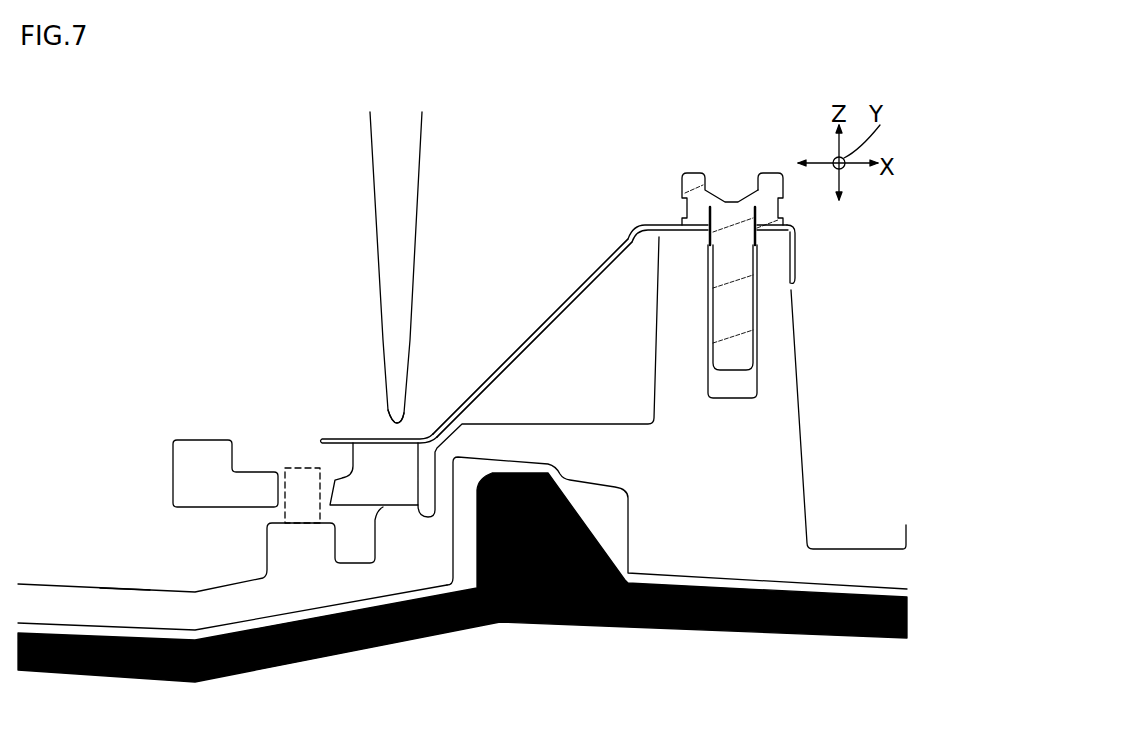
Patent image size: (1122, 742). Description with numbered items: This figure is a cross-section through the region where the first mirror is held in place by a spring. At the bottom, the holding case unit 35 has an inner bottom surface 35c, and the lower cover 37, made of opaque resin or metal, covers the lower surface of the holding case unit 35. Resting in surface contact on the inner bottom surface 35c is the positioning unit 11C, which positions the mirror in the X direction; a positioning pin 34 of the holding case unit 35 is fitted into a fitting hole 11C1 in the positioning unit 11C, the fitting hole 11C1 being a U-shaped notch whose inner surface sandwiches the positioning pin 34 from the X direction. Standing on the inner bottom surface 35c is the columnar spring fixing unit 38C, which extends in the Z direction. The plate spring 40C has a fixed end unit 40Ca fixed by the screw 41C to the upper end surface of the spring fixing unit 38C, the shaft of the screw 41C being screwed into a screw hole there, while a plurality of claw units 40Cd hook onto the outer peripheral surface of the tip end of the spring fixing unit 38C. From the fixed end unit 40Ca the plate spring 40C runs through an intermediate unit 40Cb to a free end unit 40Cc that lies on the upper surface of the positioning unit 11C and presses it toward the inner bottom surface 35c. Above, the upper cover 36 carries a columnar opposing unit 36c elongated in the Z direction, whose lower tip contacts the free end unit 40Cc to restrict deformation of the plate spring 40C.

The upper cover 36 is at (372, 172).
The opposing unit 36c is at (385, 280).
The plate spring 40C is at (573, 283).
The intermediate unit 40Cb is at (500, 365).
The free end unit 40Cc is at (406, 438).
The claw units 40Cd is at (797, 254).
The fixed end unit 40Ca is at (772, 208).
The screw 41C is at (697, 173).
The spring fixing unit 38C is at (800, 333).
The positioning unit 11C is at (173, 438).
The fitting hole 11C1 is at (333, 478).
The positioning pin 34 is at (285, 468).
The holding case unit 35 is at (88, 583).
The inner bottom surface 35c is at (125, 590).
The lower cover 37 is at (597, 625).